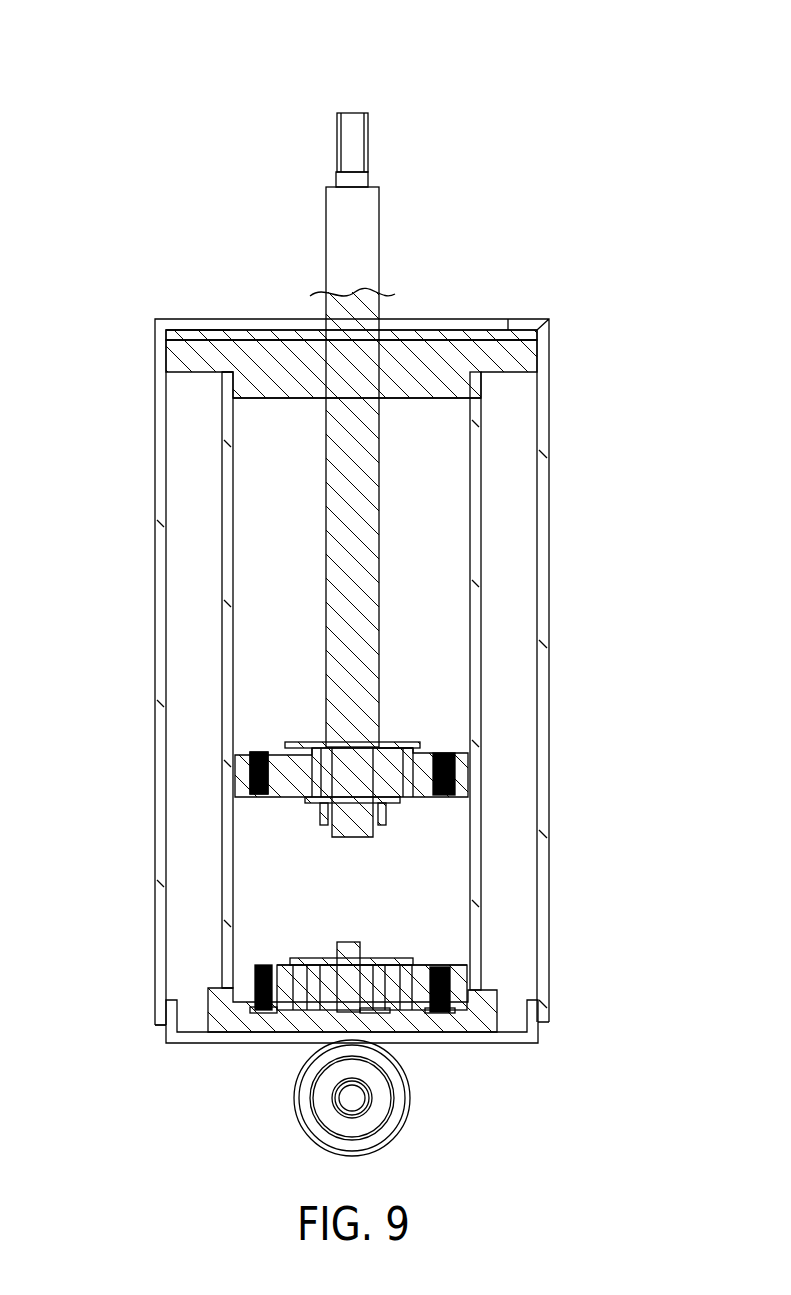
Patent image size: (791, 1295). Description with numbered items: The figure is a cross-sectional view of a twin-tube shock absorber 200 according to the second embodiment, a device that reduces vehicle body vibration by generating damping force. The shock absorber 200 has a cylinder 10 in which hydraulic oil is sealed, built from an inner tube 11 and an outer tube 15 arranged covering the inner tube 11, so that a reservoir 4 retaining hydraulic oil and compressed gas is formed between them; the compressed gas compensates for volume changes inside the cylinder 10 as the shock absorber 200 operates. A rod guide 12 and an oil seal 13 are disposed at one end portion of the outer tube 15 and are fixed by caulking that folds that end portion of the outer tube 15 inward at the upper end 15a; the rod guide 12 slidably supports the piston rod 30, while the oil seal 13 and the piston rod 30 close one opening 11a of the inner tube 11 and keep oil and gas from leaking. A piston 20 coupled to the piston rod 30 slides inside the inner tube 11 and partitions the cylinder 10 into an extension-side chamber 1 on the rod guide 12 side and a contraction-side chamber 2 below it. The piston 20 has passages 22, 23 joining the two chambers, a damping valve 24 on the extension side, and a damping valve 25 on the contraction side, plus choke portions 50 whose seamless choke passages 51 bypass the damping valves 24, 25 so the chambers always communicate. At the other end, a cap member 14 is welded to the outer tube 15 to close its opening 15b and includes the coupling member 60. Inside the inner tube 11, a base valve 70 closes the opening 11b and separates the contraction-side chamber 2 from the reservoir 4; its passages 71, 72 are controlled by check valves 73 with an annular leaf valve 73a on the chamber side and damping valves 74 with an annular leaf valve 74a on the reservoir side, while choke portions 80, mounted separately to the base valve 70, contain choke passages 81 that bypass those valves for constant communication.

The shock absorber 200 is at (147, 115).
The piston rod 30 is at (342, 270).
The outer cylinder upper end 15a is at (198, 332).
The opening 11a is at (240, 370).
The cylinder 10 is at (480, 372).
The oil seal 13 is at (178, 340).
The rod guide 12 is at (172, 365).
The inner tube 11 is at (228, 495).
The outer tube 15 is at (160, 525).
The extension-side chamber 1 is at (260, 640).
The reservoir 4 is at (197, 687).
The contraction-side chamber 2 is at (248, 892).
The piston 20 is at (240, 785).
The passage 22 is at (405, 793).
The passage 23 is at (290, 745).
The damping valve 24 is at (413, 735).
The damping valve 25 is at (315, 805).
The choke portion 50 is at (250, 765).
The choke passage 51 is at (250, 782).
The opening 15b is at (163, 1027).
The opening 11b is at (230, 1005).
The cap member 14 is at (505, 1040).
The base valve 70 is at (485, 1015).
The passage 71 is at (405, 982).
The passage 72 is at (405, 995).
The check valve 73 is at (403, 950).
The annular leaf valve 73a is at (405, 963).
The damping valve 74 is at (442, 1000).
The annular leaf valve 74a is at (440, 1015).
The choke portion 80 is at (255, 1012).
The choke passage 81 is at (263, 1012).
The coupling member 60 is at (378, 1107).